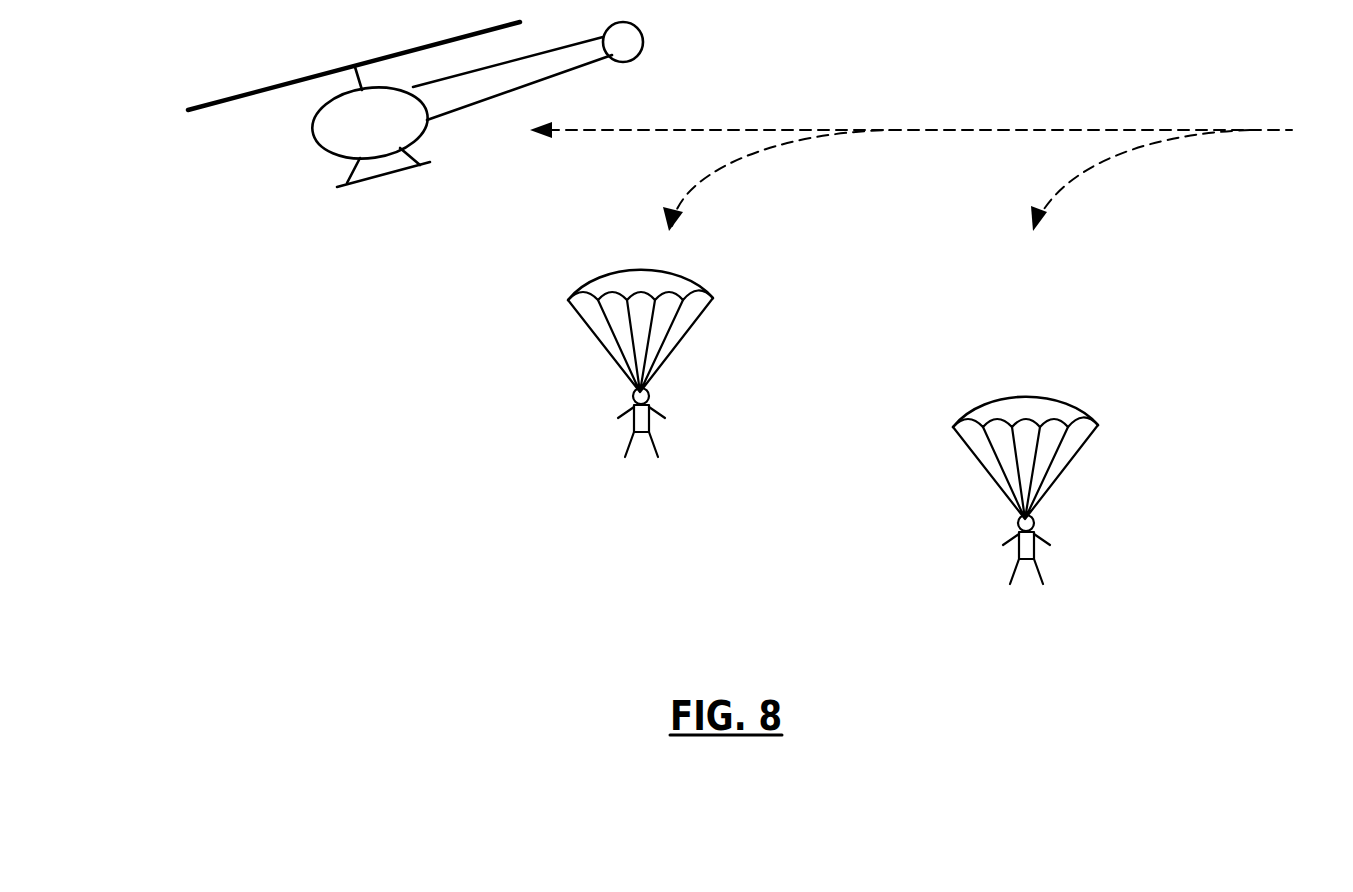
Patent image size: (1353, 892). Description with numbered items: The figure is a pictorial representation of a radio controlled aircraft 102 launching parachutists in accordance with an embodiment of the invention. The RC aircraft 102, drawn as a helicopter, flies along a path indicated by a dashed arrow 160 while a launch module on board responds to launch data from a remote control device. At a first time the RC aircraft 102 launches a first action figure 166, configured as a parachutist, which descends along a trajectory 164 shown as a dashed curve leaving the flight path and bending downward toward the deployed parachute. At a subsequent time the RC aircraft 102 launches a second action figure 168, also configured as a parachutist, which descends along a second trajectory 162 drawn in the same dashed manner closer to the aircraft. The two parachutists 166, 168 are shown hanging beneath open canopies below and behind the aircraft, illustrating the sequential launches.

The radio controlled aircraft 102 is at (415, 104).
The aircraft flight path 160 is at (911, 114).
The trajectory 162 is at (742, 158).
The trajectory 164 is at (1128, 152).
The first action figure 166 is at (1121, 411).
The second action figure 168 is at (731, 289).